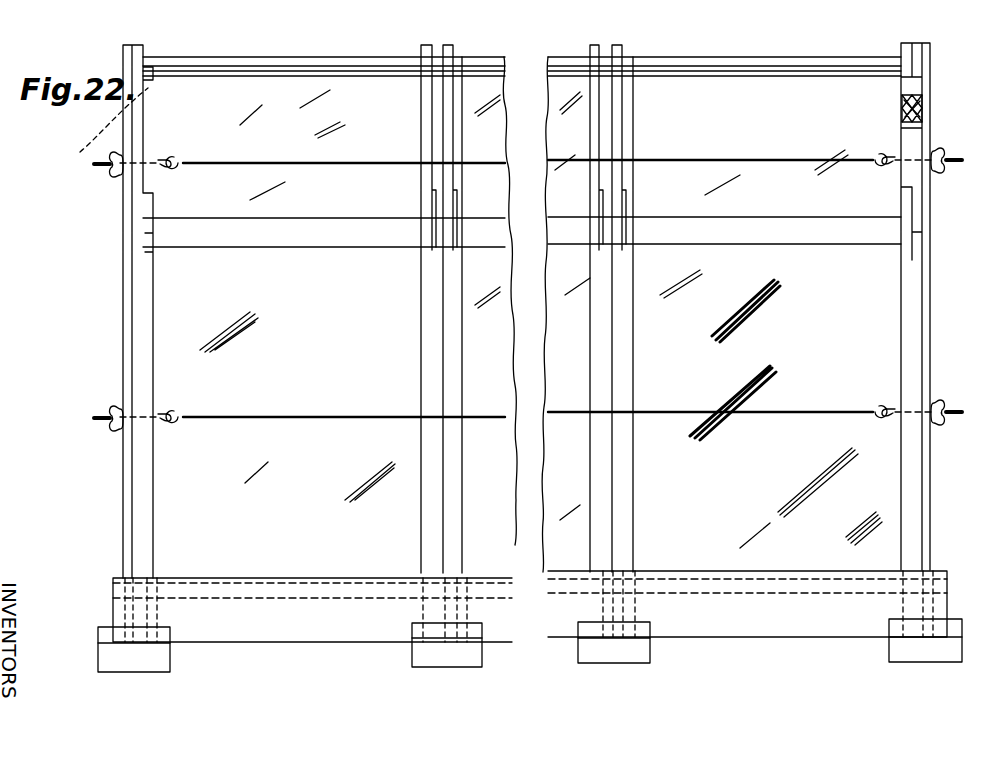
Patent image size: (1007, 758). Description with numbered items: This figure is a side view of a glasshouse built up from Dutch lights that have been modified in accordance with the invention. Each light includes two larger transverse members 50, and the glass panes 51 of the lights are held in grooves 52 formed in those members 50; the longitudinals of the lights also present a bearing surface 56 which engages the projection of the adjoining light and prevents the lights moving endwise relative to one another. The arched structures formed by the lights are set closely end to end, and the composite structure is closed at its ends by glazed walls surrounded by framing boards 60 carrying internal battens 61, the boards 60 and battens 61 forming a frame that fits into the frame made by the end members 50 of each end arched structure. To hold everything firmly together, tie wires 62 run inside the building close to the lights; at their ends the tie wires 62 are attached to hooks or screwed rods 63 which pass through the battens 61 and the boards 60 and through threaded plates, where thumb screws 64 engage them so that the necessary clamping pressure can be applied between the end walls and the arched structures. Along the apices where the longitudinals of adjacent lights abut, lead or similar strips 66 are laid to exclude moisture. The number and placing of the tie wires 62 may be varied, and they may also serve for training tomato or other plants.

The transverse member 50 is at (450, 332).
The glass pane 51 is at (522, 89).
The groove 52 is at (902, 110).
The bearing surface 56 is at (902, 100).
The framing board 60 is at (125, 98).
The internal batten 61 is at (510, 253).
The tie wire 62 is at (352, 162).
The hook or screwed rod 63 is at (160, 160).
The thumb screw 64 is at (117, 178).
The lead strip 66 is at (298, 230).